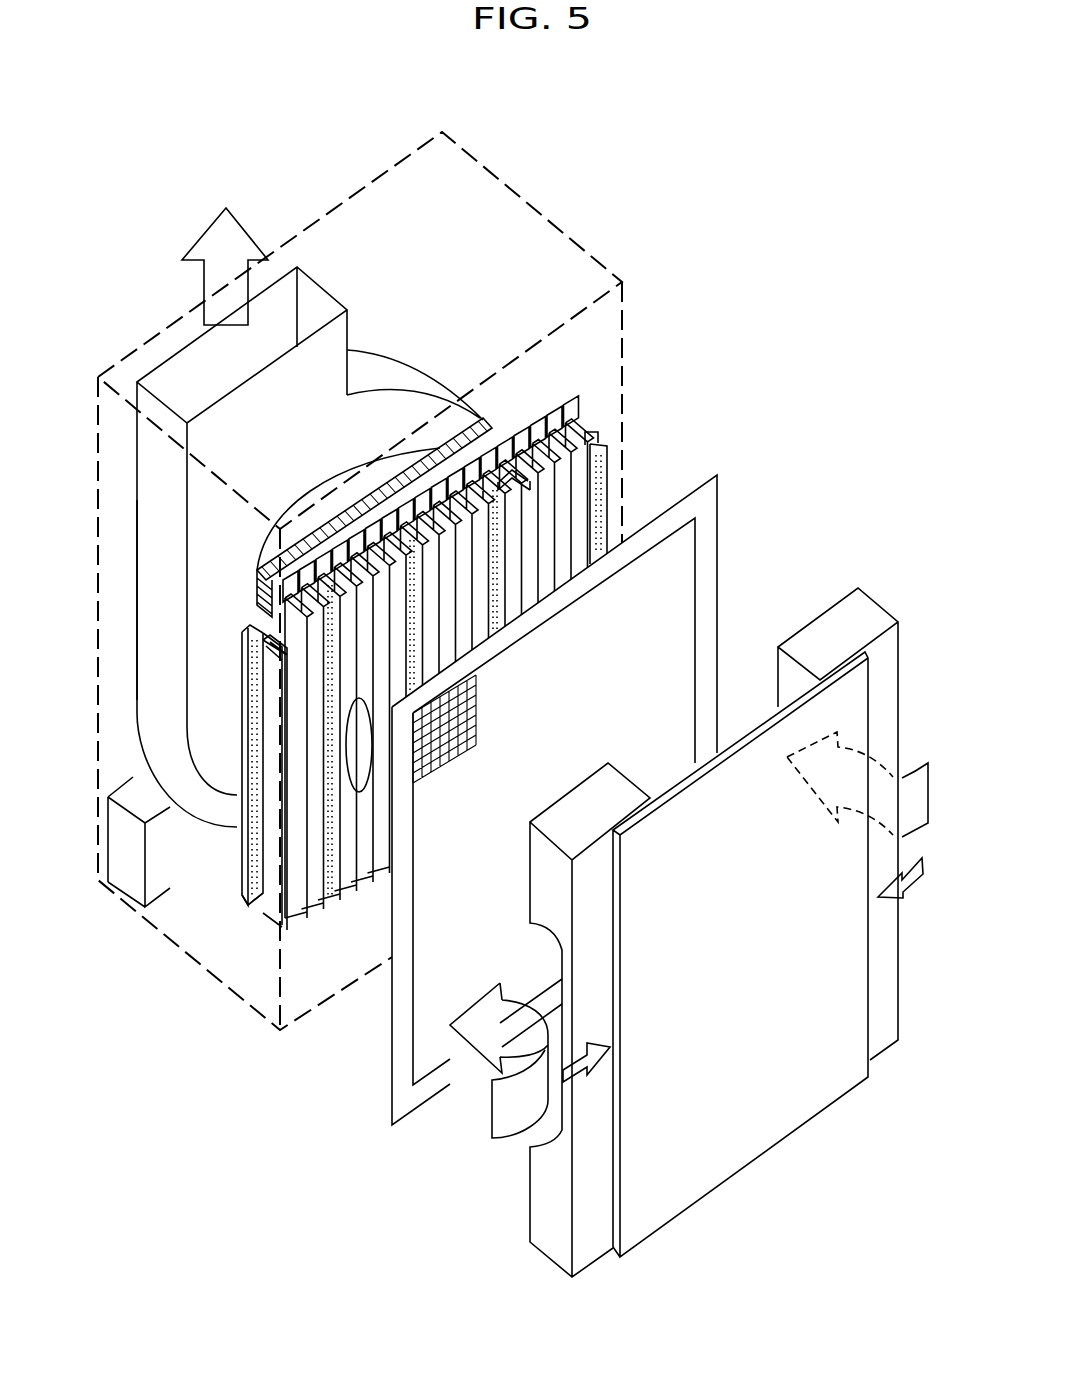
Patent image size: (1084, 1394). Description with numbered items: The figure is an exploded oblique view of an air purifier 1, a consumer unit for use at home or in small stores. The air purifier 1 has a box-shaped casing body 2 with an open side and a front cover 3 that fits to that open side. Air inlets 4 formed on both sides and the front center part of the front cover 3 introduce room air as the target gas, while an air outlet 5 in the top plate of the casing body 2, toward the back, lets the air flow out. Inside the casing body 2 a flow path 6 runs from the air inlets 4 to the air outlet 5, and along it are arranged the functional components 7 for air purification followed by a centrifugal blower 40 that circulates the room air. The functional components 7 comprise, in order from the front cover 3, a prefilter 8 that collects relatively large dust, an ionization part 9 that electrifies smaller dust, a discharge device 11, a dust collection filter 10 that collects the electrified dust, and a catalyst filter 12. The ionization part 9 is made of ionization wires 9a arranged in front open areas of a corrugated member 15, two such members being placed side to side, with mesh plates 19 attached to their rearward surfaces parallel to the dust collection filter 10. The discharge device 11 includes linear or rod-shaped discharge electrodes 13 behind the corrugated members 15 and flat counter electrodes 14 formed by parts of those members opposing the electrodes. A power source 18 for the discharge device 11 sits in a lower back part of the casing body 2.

The air purifier 1 is at (746, 170).
The casing body 2 is at (556, 227).
The front cover 3 is at (910, 1020).
The air inlets 4 is at (870, 975).
The air outlet 5 is at (140, 353).
The flow path 6 is at (770, 568).
The functional components 7 is at (608, 327).
The prefilter 8 is at (392, 1100).
The ionization part 9 is at (615, 478).
The ionization wires 9a is at (587, 437).
The dust collection filter 10 is at (243, 877).
The discharge device 11 is at (493, 433).
The catalyst filter 12 is at (257, 592).
The discharge electrodes 13 is at (365, 778).
The counter electrodes 14 is at (523, 423).
The corrugated member 15 is at (583, 443).
The power source 18 is at (110, 840).
The mesh plates 19 is at (537, 423).
The centrifugal blower 40 is at (137, 582).